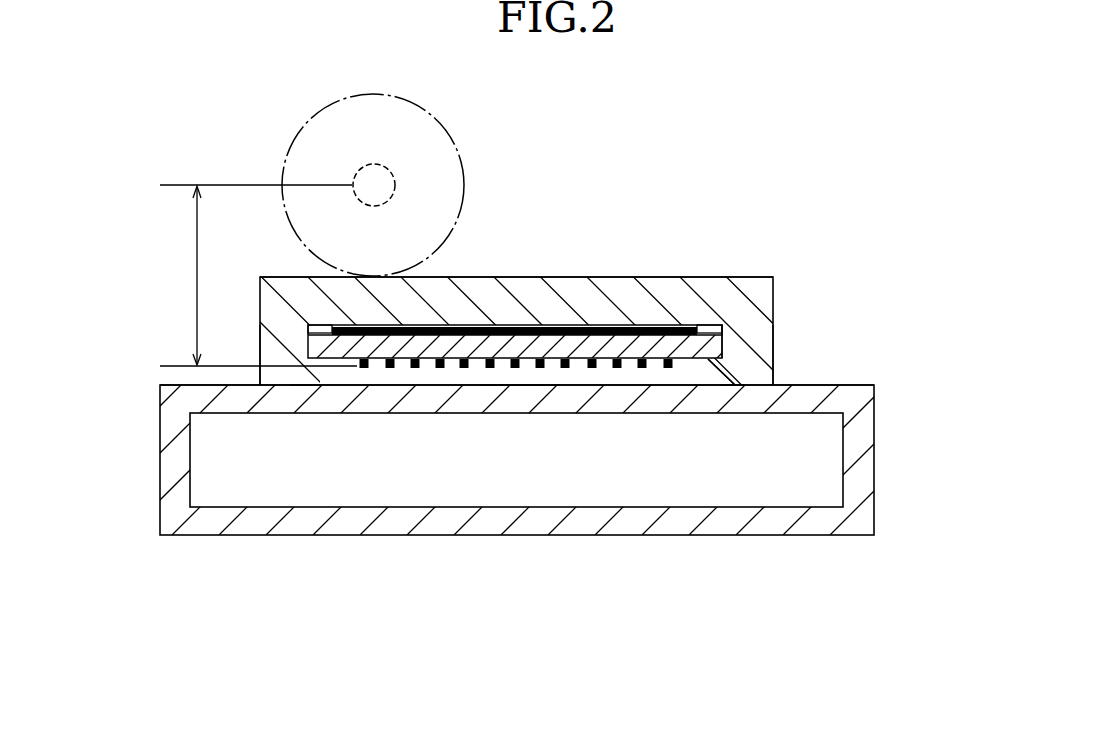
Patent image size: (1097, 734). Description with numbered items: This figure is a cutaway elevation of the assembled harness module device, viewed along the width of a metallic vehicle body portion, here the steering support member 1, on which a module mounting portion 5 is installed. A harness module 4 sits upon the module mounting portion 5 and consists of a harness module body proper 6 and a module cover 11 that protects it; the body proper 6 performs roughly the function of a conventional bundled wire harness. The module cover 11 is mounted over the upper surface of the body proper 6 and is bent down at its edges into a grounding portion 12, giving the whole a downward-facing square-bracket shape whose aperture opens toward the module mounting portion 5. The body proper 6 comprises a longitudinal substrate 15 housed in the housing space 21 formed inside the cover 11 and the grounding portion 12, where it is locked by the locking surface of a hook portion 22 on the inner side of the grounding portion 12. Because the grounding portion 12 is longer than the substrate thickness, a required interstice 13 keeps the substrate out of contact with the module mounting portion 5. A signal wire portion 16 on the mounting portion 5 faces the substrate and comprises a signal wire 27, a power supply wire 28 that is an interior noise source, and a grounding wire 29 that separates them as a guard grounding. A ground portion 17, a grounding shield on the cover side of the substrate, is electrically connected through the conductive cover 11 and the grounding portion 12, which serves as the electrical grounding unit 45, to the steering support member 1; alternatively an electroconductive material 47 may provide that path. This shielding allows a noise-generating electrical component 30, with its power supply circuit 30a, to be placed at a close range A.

The steering support member 1 is at (160, 443).
The harness module 4 is at (777, 261).
The module mounting portion 5 is at (872, 386).
The harness module body proper 6 is at (726, 342).
The module cover 11 is at (487, 297).
The grounding portion 12 is at (558, 455).
The electrical grounding unit 45 is at (812, 355).
The electroconductive material 47 is at (812, 355).
The interstice 13 is at (507, 378).
The longitudinal substrate 15 is at (622, 346).
The signal wire portion 16 is at (525, 371).
The ground portion 17 is at (550, 327).
The housing space 21 is at (327, 330).
The hook portion 22 is at (298, 372).
The signal wire 27 is at (390, 368).
The power supply wire 28 is at (590, 368).
The grounding wire 29 is at (363, 368).
The electrical component 30 is at (462, 176).
The power supply circuit 30a is at (392, 168).
The close range A is at (196, 268).